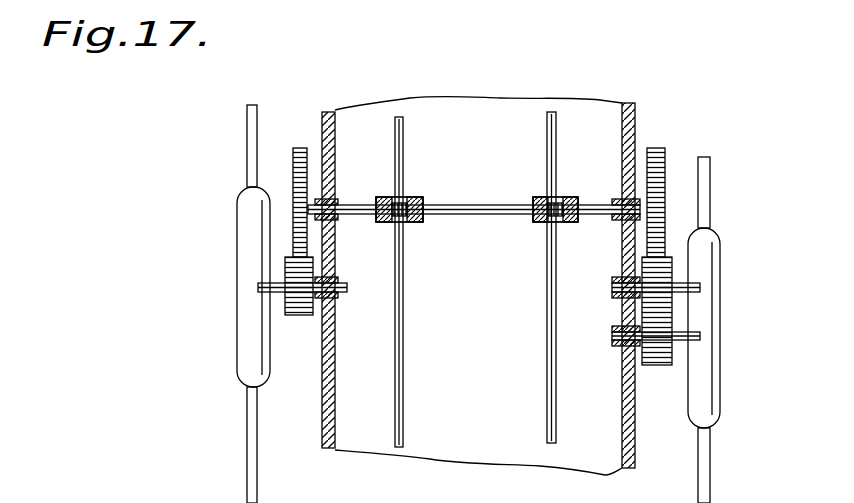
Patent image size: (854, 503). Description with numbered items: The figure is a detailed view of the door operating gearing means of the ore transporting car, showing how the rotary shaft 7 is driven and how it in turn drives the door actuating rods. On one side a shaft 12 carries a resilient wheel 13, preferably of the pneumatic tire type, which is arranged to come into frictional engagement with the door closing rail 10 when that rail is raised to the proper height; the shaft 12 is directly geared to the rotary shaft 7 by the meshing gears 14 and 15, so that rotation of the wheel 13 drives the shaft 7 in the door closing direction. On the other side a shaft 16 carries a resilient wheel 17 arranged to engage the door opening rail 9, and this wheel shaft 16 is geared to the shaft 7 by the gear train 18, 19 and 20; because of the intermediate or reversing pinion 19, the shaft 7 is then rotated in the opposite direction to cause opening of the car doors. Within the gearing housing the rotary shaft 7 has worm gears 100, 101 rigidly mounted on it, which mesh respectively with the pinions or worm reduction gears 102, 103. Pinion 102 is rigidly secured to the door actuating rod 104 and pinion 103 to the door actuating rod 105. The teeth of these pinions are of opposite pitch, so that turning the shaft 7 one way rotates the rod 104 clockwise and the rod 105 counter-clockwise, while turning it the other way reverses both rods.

The rotary shaft 7 is at (472, 206).
The door opening rail 9 is at (710, 477).
The door closing rail 10 is at (247, 168).
The shaft 12 is at (262, 286).
The resilient wheel 13 is at (241, 374).
The gear 14 is at (290, 302).
The gear 15 is at (294, 150).
The shaft 16 is at (665, 336).
The resilient wheel 17 is at (712, 253).
The gear 18 is at (672, 358).
The intermediate or reversing pinion 19 is at (663, 294).
The gear 20 is at (665, 162).
The worm gear 100 is at (414, 222).
The worm gear 101 is at (562, 223).
The pinion or worm reduction gear 102 is at (412, 198).
The pinion or worm reduction gear 103 is at (565, 198).
The door actuating rod 104 is at (403, 335).
The door actuating rod 105 is at (547, 395).